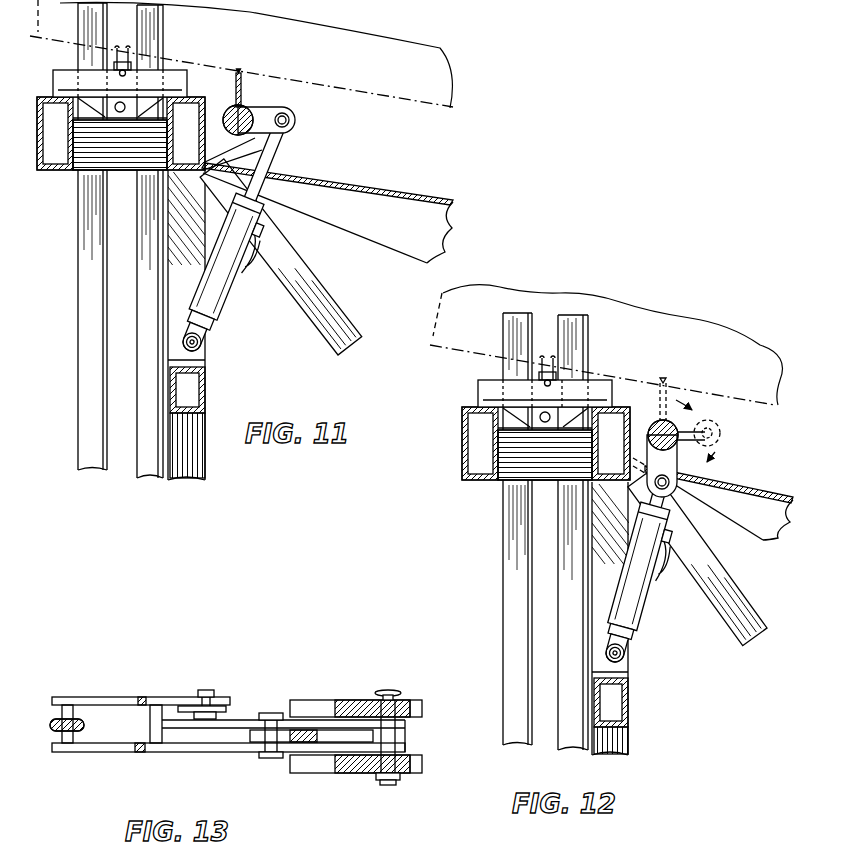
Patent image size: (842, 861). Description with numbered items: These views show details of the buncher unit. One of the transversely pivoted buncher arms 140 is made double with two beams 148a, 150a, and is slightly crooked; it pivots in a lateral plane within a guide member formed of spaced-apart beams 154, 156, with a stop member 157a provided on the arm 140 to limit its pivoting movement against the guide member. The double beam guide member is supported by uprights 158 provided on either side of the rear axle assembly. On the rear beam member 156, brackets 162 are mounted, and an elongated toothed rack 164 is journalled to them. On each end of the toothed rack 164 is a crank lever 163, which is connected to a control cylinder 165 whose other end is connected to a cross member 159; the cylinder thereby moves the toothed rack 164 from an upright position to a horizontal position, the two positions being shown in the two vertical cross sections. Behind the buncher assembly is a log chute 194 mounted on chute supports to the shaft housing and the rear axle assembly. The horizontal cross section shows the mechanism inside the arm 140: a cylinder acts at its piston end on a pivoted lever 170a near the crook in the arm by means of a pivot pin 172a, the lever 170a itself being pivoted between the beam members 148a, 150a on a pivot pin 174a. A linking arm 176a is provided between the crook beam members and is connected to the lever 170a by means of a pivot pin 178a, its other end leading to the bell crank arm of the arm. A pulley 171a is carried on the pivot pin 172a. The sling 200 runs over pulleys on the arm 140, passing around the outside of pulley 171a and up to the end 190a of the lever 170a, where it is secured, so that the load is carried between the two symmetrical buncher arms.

In FIG. 11, the buncher arm 140 is at (112, 257).
In FIG. 12, the buncher arm 140 is at (565, 558).
In FIG. 13, the buncher arm 140 is at (382, 729).
In FIG. 11, the beam 148a is at (90, 455).
In FIG. 12, the beam 148a is at (517, 743).
In FIG. 13, the beam 148a is at (337, 775).
In FIG. 11, the beam 150a is at (149, 470).
In FIG. 12, the beam 150a is at (577, 748).
In FIG. 13, the beam 150a is at (343, 700).
In FIG. 11, the beam 154 is at (60, 170).
In FIG. 12, the beam 154 is at (475, 485).
In FIG. 11, the rear beam member 156 is at (207, 110).
In FIG. 12, the rear beam member 156 is at (645, 424).
In FIG. 11, the stop member 157a is at (63, 80).
In FIG. 12, the stop member 157a is at (490, 396).
In FIG. 11, the upright 158 is at (197, 460).
In FIG. 12, the upright 158 is at (633, 747).
In FIG. 11, the cross member 159 is at (205, 372).
In FIG. 12, the cross member 159 is at (632, 708).
In FIG. 11, the bracket 162 is at (240, 78).
In FIG. 12, the bracket 162 is at (652, 386).
In FIG. 11, the crank lever 163 is at (265, 100).
In FIG. 12, the crank lever 163 is at (680, 470).
In FIG. 11, the toothed rack 164 is at (240, 105).
In FIG. 12, the toothed rack 164 is at (708, 428).
In FIG. 11, the control cylinder 165 is at (250, 262).
In FIG. 12, the control cylinder 165 is at (640, 581).
In FIG. 11, the log chute 194 is at (355, 178).
In FIG. 12, the log chute 194 is at (742, 507).
In FIG. 13, the lever 170a is at (132, 757).
In FIG. 13, the pulley 171a is at (232, 712).
In FIG. 13, the pivot pin 172a is at (203, 692).
In FIG. 13, the pivot pin 174a is at (398, 702).
In FIG. 13, the linking arm 176a is at (283, 720).
In FIG. 13, the pivot pin 178a is at (273, 757).
In FIG. 13, the end of lever 190a is at (67, 712).
In FIG. 13, the sling 200 is at (162, 716).